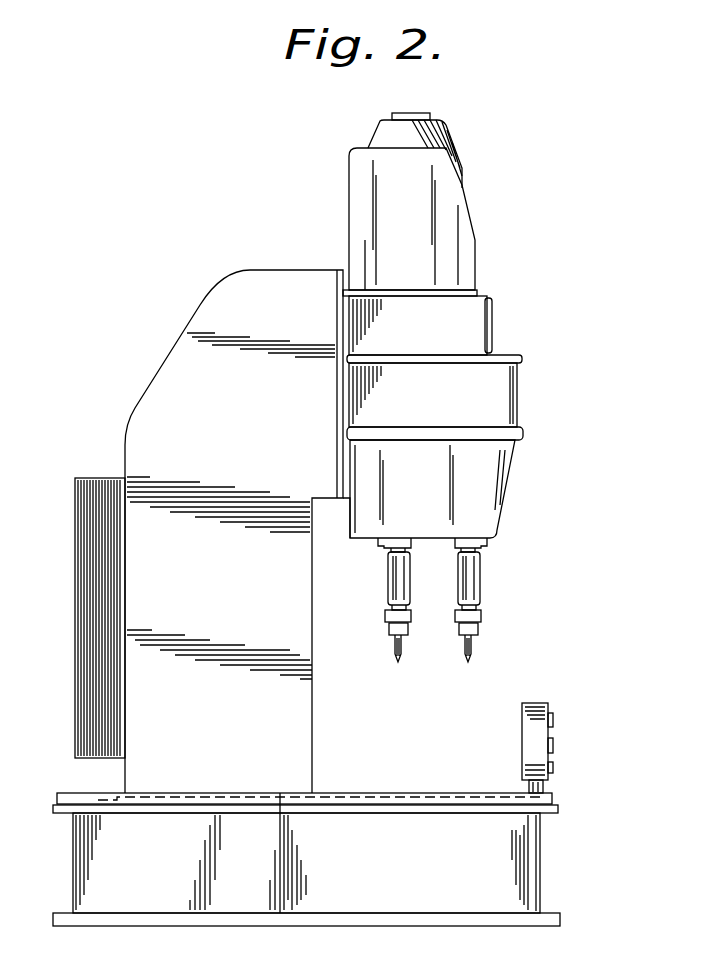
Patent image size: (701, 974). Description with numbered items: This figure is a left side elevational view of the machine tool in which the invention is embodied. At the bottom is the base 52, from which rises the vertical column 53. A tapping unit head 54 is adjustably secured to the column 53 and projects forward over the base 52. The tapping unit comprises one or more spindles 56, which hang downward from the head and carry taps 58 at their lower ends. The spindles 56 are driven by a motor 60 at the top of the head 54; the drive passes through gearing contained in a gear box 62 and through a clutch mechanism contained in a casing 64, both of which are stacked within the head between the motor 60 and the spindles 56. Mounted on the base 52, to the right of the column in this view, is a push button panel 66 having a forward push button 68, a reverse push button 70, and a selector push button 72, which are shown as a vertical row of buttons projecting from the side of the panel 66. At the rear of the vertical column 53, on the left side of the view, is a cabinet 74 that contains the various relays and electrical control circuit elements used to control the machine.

The base 52 is at (540, 873).
The vertical column 53 is at (293, 758).
The tapping unit head 54 is at (440, 308).
The spindles 56 is at (478, 580).
The taps 58 is at (405, 652).
The motor 60 is at (445, 133).
The gear box 62 is at (503, 392).
The casing 64 is at (470, 315).
The push button panel 66 is at (538, 703).
The forward push button 68 is at (553, 718).
The reverse push button 70 is at (553, 745).
The selector push button 72 is at (553, 768).
The cabinet 74 is at (83, 663).